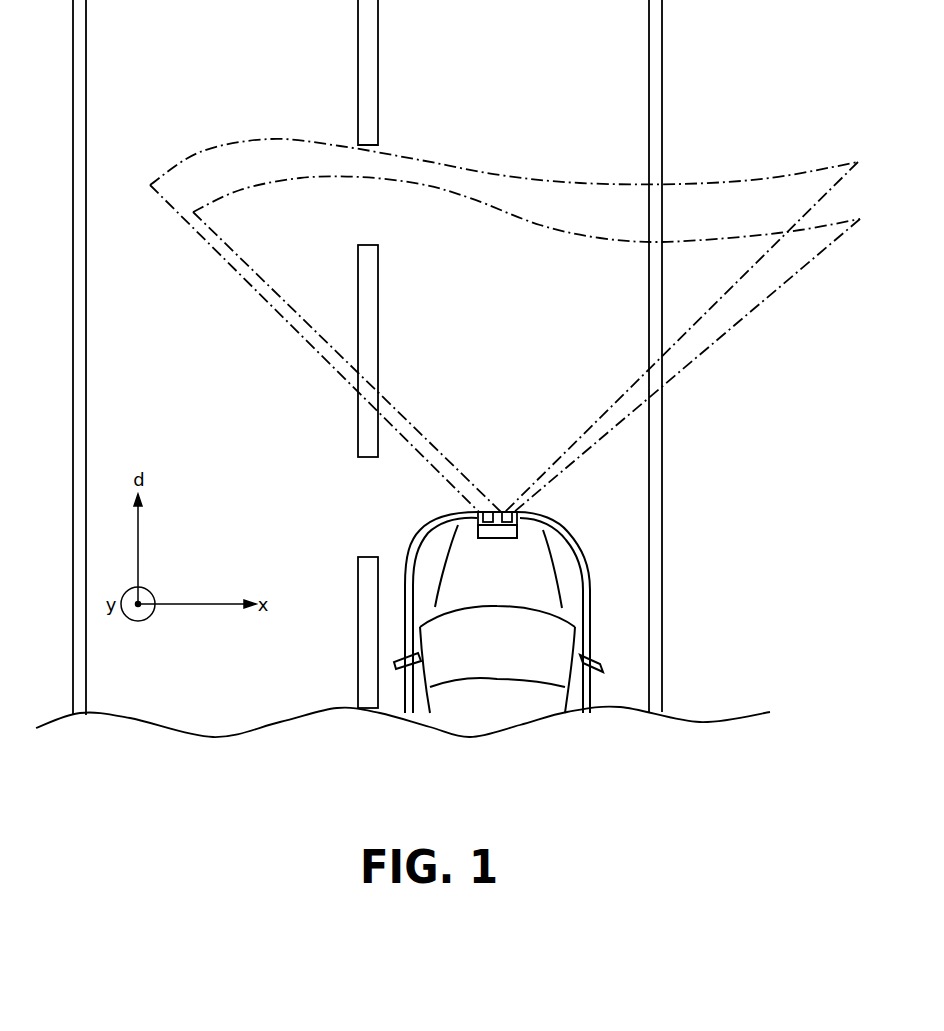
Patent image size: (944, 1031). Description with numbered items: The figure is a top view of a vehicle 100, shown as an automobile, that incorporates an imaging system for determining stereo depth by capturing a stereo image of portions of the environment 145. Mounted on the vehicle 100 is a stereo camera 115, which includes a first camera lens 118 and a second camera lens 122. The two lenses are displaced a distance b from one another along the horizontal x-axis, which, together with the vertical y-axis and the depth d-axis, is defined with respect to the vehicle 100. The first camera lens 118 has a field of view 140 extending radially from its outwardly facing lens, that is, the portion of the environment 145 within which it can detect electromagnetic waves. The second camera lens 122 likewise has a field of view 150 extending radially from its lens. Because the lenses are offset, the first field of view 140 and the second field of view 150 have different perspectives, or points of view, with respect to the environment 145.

The vehicle 100 is at (590, 615).
The stereo camera 115 is at (505, 538).
The first camera lens 118 is at (480, 512).
The second camera lens 122 is at (518, 512).
The field of view 140 is at (200, 235).
The environment 145 is at (811, 440).
The field of view 150 is at (760, 305).